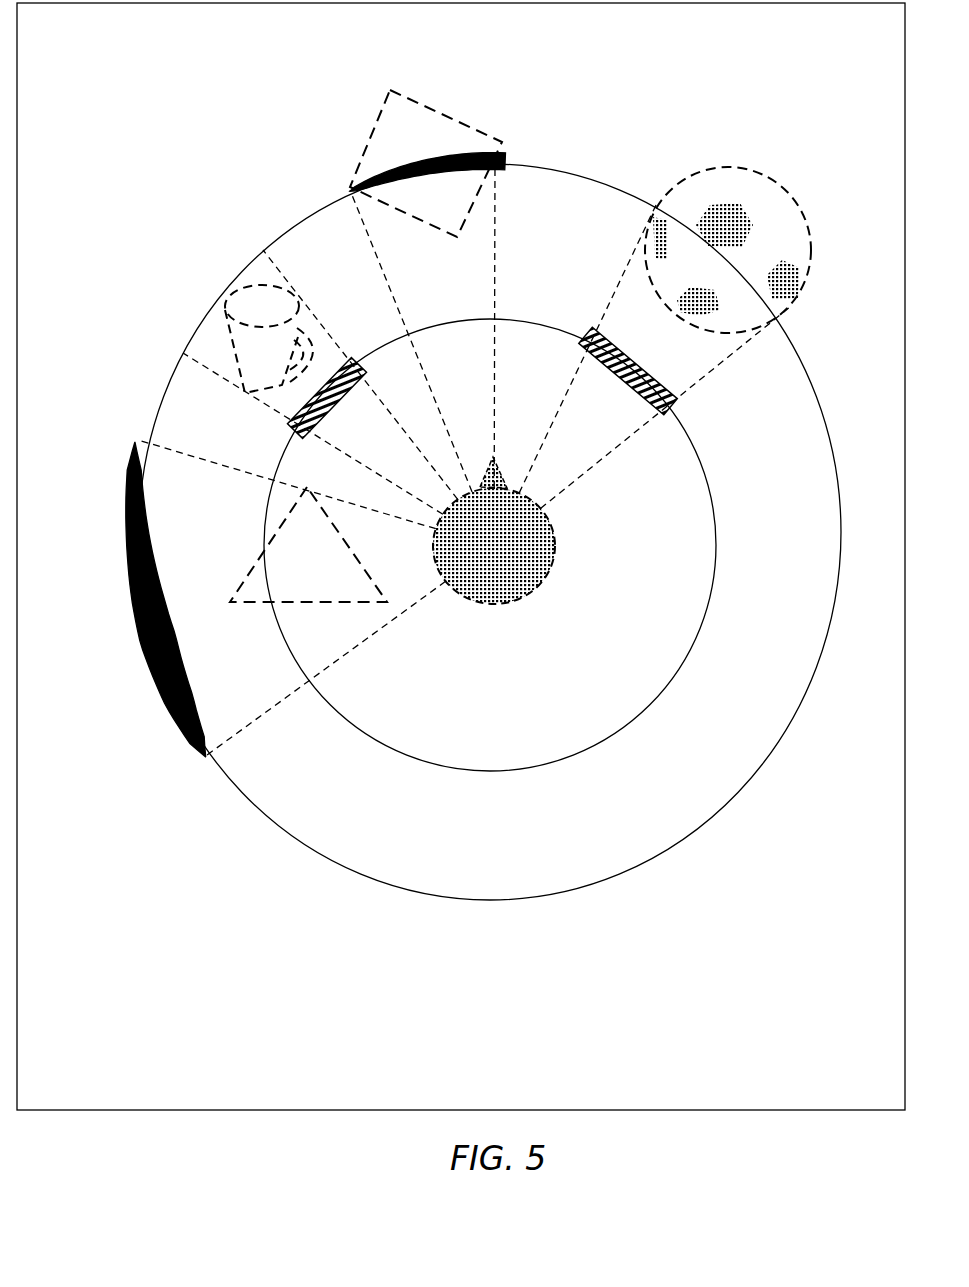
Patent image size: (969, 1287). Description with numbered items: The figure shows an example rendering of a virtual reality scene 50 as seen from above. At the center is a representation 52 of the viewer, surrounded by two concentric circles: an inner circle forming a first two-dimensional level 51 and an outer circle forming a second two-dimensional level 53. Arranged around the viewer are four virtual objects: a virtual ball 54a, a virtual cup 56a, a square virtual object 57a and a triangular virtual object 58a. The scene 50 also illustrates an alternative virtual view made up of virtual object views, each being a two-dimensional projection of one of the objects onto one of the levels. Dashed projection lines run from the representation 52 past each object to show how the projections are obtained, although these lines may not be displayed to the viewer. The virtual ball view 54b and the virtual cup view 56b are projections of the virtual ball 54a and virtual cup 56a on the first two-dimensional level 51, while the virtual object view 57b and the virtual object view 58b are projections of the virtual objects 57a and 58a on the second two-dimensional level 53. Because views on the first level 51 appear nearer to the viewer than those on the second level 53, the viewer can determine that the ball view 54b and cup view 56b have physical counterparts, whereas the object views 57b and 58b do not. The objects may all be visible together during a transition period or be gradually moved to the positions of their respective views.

The virtual reality scene 50 is at (768, 967).
The first two-dimensional level 51 is at (620, 733).
The representation of viewer 52 is at (523, 593).
The second two-dimensional level 53 is at (662, 852).
The virtual ball 54a is at (800, 287).
The virtual ball view 54b is at (623, 390).
The virtual cup 56a is at (230, 328).
The virtual cup view 56b is at (295, 432).
The virtual object 57a is at (448, 112).
The virtual object view 57b is at (457, 153).
The virtual object 58a is at (343, 602).
The virtual object view 58b is at (160, 697).